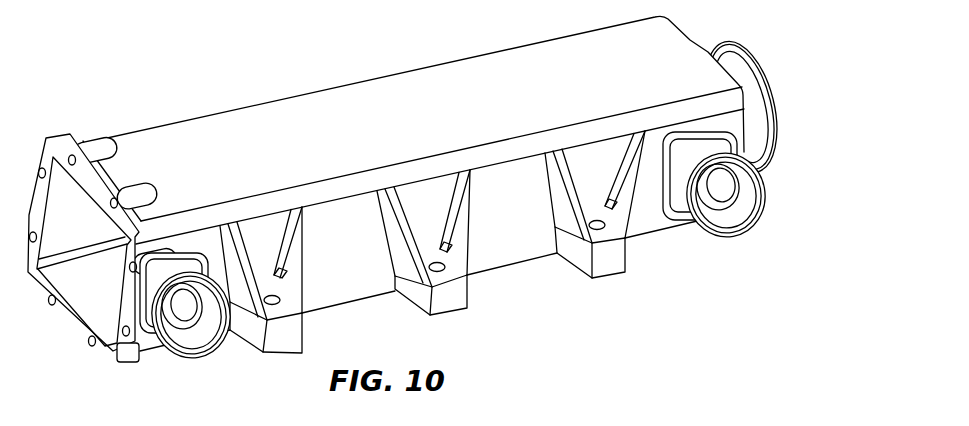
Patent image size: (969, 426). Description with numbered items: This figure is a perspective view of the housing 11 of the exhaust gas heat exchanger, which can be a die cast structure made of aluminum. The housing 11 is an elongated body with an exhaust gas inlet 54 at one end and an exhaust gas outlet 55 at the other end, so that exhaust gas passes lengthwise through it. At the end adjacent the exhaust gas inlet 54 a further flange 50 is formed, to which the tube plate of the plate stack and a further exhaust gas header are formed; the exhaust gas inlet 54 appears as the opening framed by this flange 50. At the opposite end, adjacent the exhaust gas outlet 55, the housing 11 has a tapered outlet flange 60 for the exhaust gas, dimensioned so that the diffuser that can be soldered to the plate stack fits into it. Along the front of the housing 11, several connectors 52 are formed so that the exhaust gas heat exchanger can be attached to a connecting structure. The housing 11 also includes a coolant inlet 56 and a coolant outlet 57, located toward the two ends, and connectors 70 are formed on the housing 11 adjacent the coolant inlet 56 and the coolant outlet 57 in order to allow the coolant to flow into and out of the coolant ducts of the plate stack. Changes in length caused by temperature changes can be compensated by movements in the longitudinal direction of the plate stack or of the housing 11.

The housing 11 is at (340, 290).
The flange 50 is at (96, 268).
The connectors 52 is at (450, 303).
The exhaust gas inlet 54 is at (68, 317).
The exhaust gas outlet 55 is at (773, 102).
The coolant inlet 56 is at (164, 350).
The coolant outlet 57 is at (756, 217).
The tapered outlet flange 60 is at (743, 46).
The connectors 70 is at (200, 350).